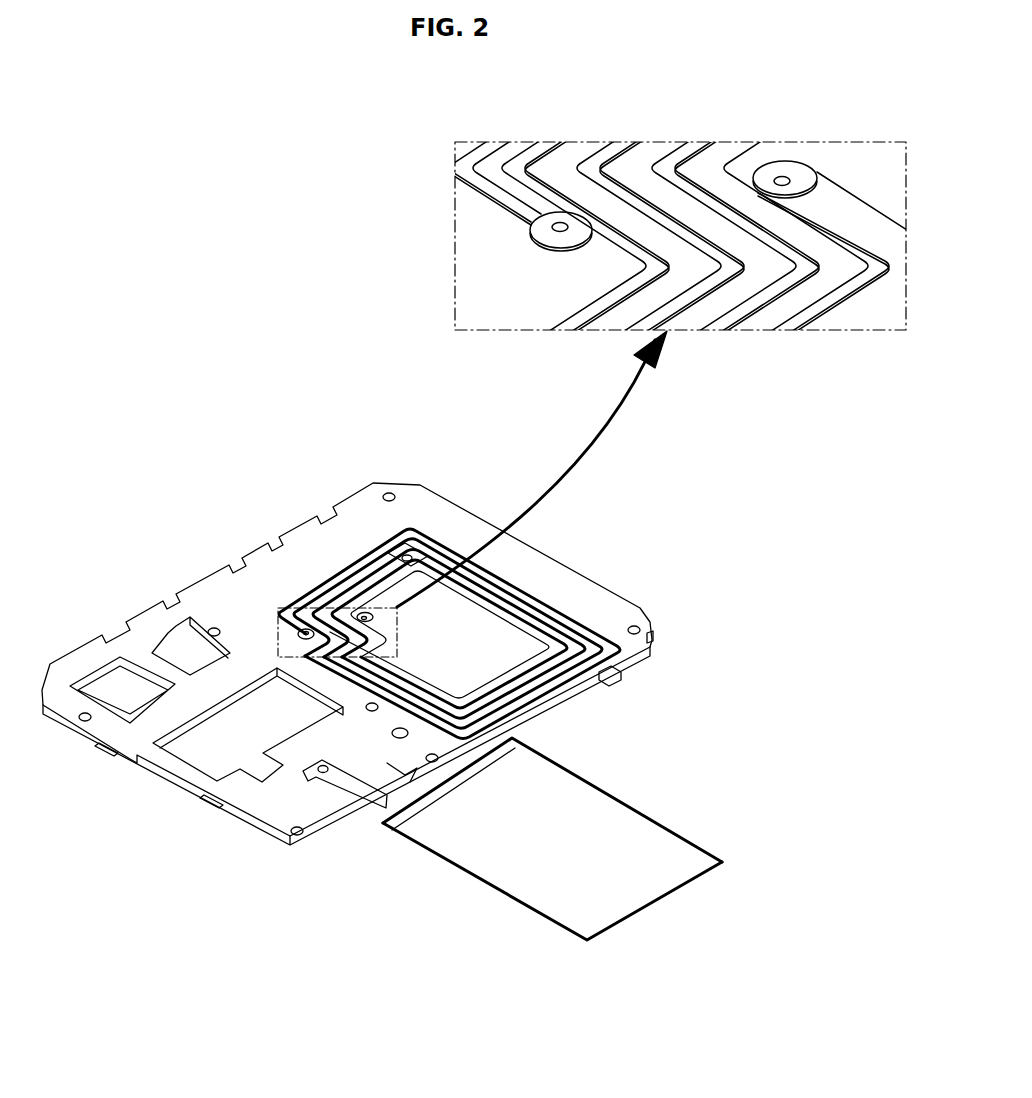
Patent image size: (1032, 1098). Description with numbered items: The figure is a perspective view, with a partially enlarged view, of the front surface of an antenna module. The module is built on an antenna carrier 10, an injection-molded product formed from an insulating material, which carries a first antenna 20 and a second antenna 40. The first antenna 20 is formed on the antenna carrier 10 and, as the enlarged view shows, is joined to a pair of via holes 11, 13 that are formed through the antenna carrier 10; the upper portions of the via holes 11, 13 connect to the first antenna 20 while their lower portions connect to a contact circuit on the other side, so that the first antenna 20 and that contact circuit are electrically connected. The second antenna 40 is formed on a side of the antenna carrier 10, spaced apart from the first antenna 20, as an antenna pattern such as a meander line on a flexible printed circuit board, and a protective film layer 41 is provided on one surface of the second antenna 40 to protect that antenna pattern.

The antenna carrier 10 is at (273, 803).
The via hole 11 is at (552, 227).
The via hole 13 is at (785, 180).
The first antenna 20 is at (372, 550).
The second antenna 40 is at (503, 737).
The protective film layer 41 is at (553, 893).